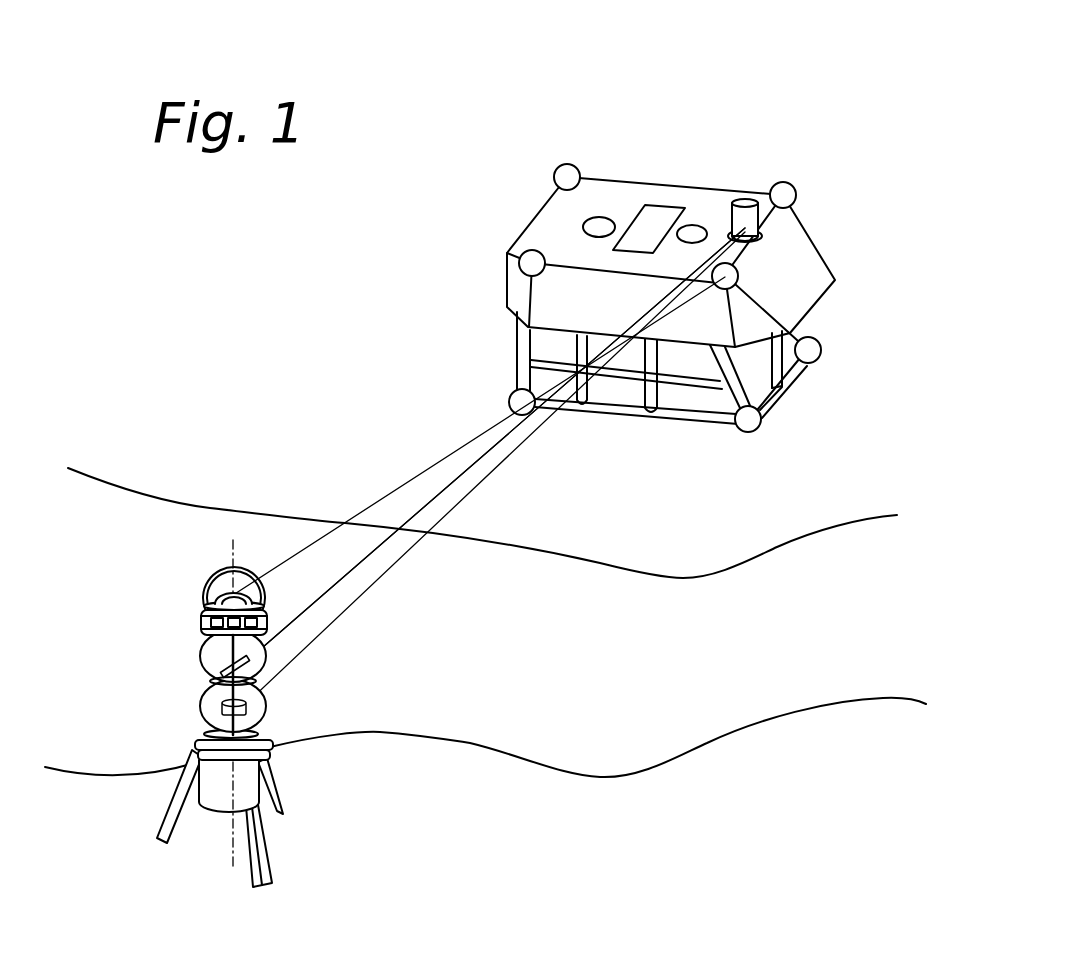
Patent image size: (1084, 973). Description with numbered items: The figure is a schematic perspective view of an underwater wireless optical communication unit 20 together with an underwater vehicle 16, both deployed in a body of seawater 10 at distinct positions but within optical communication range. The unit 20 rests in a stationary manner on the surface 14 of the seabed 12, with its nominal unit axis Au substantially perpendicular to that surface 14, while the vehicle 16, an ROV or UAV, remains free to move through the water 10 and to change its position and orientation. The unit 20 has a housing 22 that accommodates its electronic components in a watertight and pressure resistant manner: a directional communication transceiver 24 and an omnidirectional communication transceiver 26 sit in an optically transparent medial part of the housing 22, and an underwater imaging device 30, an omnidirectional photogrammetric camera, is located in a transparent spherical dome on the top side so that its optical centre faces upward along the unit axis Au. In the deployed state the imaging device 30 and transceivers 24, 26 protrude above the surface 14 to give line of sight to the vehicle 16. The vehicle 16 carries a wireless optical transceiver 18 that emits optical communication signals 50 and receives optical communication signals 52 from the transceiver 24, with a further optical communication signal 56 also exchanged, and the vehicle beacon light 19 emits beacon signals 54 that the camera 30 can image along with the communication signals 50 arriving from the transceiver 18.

The body of seawater 10 is at (311, 309).
The seabed 12 is at (482, 661).
The surface of the seabed 14 is at (177, 521).
The underwater vehicle 16 is at (694, 135).
The vehicle transceiver 18 is at (747, 201).
The light beacon 19 is at (737, 269).
The underwater wireless optical communication unit 20 is at (256, 693).
The housing 22 is at (213, 800).
The directional communication transceiver 24 is at (222, 674).
The omnidirectional communication transceiver 26 is at (222, 708).
The underwater imaging device 30 is at (225, 592).
The optical communication signal 50 is at (455, 473).
The optical communication signal 52 is at (490, 452).
The optical beacon signal 54 is at (383, 495).
The further optical communication signal 56 is at (446, 515).
The unit axis Au is at (232, 872).